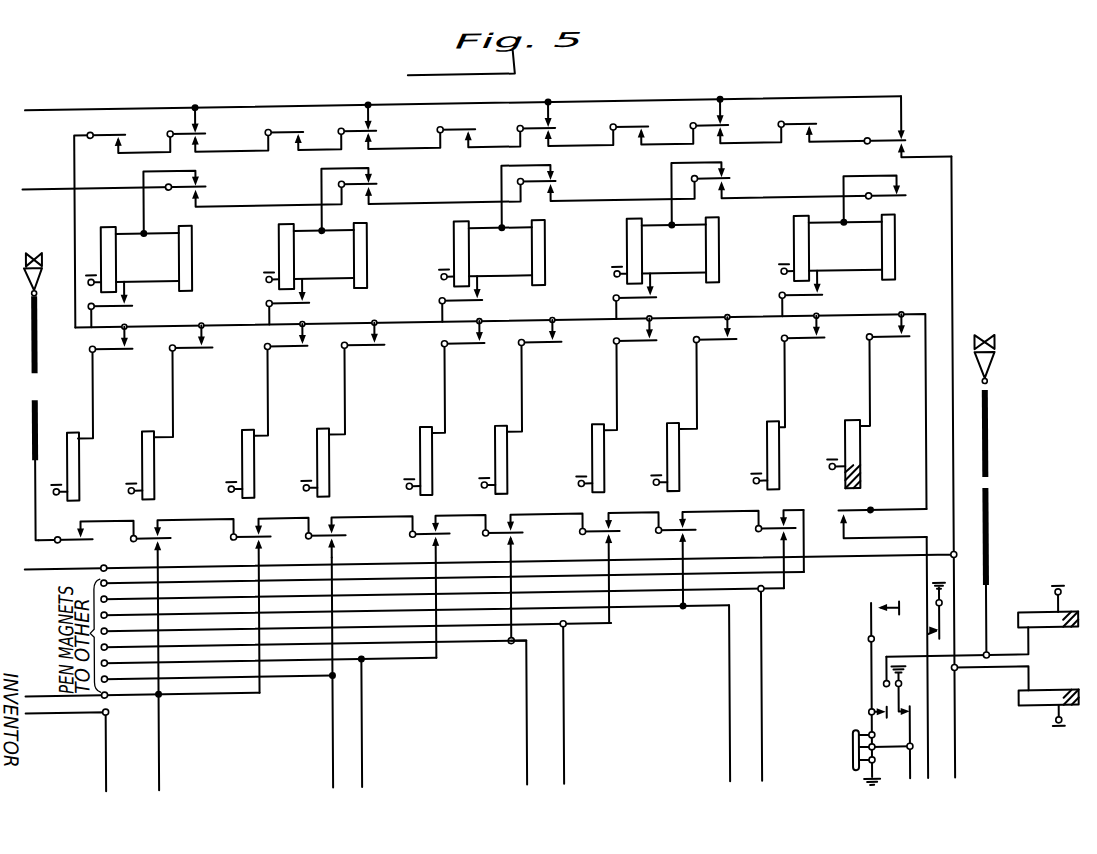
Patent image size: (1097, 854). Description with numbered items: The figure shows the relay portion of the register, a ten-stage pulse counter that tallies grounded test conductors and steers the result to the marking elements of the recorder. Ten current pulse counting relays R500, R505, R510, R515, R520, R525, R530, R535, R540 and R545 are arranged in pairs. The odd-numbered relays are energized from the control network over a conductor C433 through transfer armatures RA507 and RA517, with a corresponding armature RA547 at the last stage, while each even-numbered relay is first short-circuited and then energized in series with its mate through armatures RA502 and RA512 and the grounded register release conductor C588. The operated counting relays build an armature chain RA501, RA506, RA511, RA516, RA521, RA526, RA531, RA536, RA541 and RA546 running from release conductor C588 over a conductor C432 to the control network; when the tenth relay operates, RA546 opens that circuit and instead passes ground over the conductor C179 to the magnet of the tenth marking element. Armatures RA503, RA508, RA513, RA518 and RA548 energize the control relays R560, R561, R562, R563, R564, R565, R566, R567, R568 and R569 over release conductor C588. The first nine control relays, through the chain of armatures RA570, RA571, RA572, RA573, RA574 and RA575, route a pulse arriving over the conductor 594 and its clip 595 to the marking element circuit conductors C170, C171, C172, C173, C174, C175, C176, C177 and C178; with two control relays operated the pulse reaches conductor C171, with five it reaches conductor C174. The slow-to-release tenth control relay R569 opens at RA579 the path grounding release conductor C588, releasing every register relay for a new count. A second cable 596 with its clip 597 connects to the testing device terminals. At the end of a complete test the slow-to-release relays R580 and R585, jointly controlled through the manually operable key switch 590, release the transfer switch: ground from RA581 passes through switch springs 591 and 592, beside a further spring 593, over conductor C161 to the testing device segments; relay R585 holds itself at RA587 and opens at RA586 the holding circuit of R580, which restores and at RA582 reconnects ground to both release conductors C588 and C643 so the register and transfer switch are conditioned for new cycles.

The conductor C432 is at (32, 102).
The conductor C433 is at (42, 152).
The armature of counting relay R500 RA501 is at (109, 112).
The armature of counting relay R505 RA506 is at (183, 112).
The armature of counting relay R510 RA511 is at (286, 108).
The armature of counting relay R515 RA516 is at (356, 108).
The armature of counting relay R520 RA521 is at (461, 108).
The armature of counting relay R525 RA526 is at (539, 108).
The armature of counting relay R530 RA531 is at (646, 107).
The armature of counting relay R535 RA536 is at (716, 107).
The armature of counting relay R540 RA541 is at (811, 107).
The armature of counting relay R545 RA546 is at (896, 142).
The armature of counting relay R505 RA507 is at (206, 182).
The armature of counting relay R515 RA517 is at (380, 181).
The relay contact RA547 is at (890, 203).
The first counting relay R500 is at (110, 266).
The second counting relay R505 is at (188, 266).
The third counting relay R510 is at (285, 266).
The fourth counting relay R515 is at (362, 266).
The fifth counting relay R520 is at (460, 266).
The sixth counting relay R525 is at (537, 266).
The seventh counting relay R530 is at (633, 266).
The eighth counting relay R535 is at (712, 266).
The ninth counting relay R540 is at (795, 266).
The tenth counting relay R545 is at (888, 266).
The armature of counting relay R500 RA502 is at (134, 304).
The armature of counting relay R510 RA512 is at (314, 304).
The register release conductor C588 is at (598, 318).
The armature of counting relay R500 RA503 is at (112, 358).
The armature of counting relay R505 RA508 is at (204, 358).
The armature of counting relay R510 RA513 is at (282, 358).
The armature of counting relay R515 RA518 is at (377, 358).
The armature of counting relay R545 RA548 is at (872, 344).
The first control relay R560 is at (74, 472).
The second control relay R561 is at (152, 472).
The third control relay R562 is at (250, 472).
The fourth control relay R563 is at (325, 472).
The fifth control relay R564 is at (425, 472).
The sixth control relay R565 is at (500, 472).
The seventh control relay R566 is at (597, 472).
The eighth control relay R567 is at (672, 472).
The ninth control relay R568 is at (775, 472).
The tenth control relay R569 is at (857, 472).
The armature of control relay R560 RA570 is at (114, 546).
The armature of control relay R561 RA571 is at (169, 548).
The armature of control relay R562 RA572 is at (269, 548).
The armature of control relay R563 RA573 is at (347, 548).
The armature of control relay R564 RA574 is at (444, 548).
The armature of control relay R565 RA575 is at (522, 548).
The armature of control relay R569 RA579 is at (856, 535).
The marking element circuit conductor C179 is at (40, 545).
The marking element circuit conductor C170 is at (101, 737).
The marking element circuit conductor C171 is at (167, 720).
The marking element circuit conductor C172 is at (329, 707).
The marking element circuit conductor C173 is at (362, 682).
The marking element circuit conductor C174 is at (524, 681).
The marking element circuit conductor C175 is at (564, 632).
The marking element circuit conductor C176 is at (727, 640).
The marking element circuit conductor C177 is at (760, 659).
The marking element circuit conductor C178 is at (792, 578).
The release conductor C643 is at (930, 768).
The conductor C161 is at (883, 757).
The conductor 594 is at (38, 348).
The clip 595 is at (52, 239).
The second cable 596 is at (990, 555).
The clip 597 is at (990, 354).
The slow-to-release relay R580 is at (1031, 636).
The slow-to-release relay R585 is at (1025, 708).
The armature of relay R580 RA581 is at (868, 626).
The armature of relay R580 RA582 is at (913, 618).
The armature of relay R585 RA586 is at (883, 688).
The armature of relay R585 RA587 is at (905, 703).
The key switch 590 is at (867, 718).
The switch spring 591 is at (846, 738).
The switch spring 592 is at (847, 752).
The contact 593 is at (848, 766).